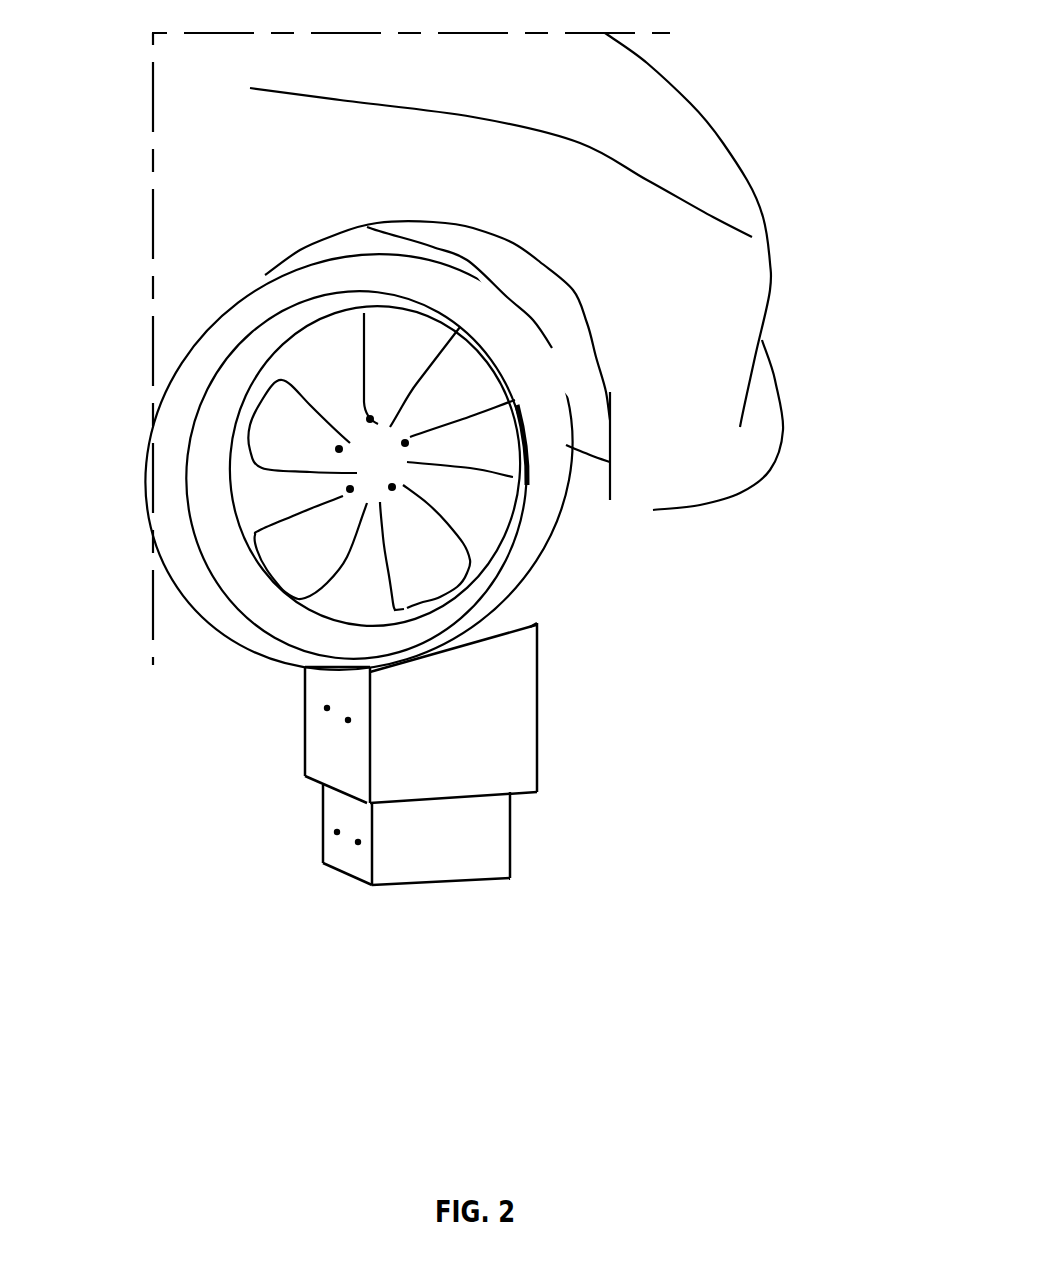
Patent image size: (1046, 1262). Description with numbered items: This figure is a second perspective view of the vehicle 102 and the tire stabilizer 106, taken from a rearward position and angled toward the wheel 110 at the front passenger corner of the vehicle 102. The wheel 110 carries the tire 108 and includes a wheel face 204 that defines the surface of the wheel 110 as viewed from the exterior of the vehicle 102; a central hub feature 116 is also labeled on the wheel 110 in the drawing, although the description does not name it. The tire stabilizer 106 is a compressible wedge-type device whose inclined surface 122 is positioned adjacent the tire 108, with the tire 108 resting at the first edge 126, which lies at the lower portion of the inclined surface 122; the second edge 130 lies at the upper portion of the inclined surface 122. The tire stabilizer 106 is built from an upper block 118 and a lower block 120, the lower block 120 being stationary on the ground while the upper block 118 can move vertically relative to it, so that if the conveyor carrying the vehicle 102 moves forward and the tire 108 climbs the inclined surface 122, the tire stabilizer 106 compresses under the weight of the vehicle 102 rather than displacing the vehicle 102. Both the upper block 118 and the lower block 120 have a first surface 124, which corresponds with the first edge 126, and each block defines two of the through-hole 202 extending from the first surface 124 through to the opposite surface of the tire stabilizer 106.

The vehicle 102 is at (650, 255).
The tire 108 is at (197, 380).
The wheel 110 is at (270, 488).
The wheel hub 116 is at (368, 418).
The wheel face 204 is at (462, 394).
The inclined surface 122 is at (500, 610).
The second edge 130 is at (515, 615).
The upper block 118 is at (416, 655).
The tire stabilizer 106 is at (397, 734).
The lower block 120 is at (492, 829).
The first surface 124 is at (369, 780).
The first edge 126 is at (367, 668).
The through-hole 202 is at (348, 720).